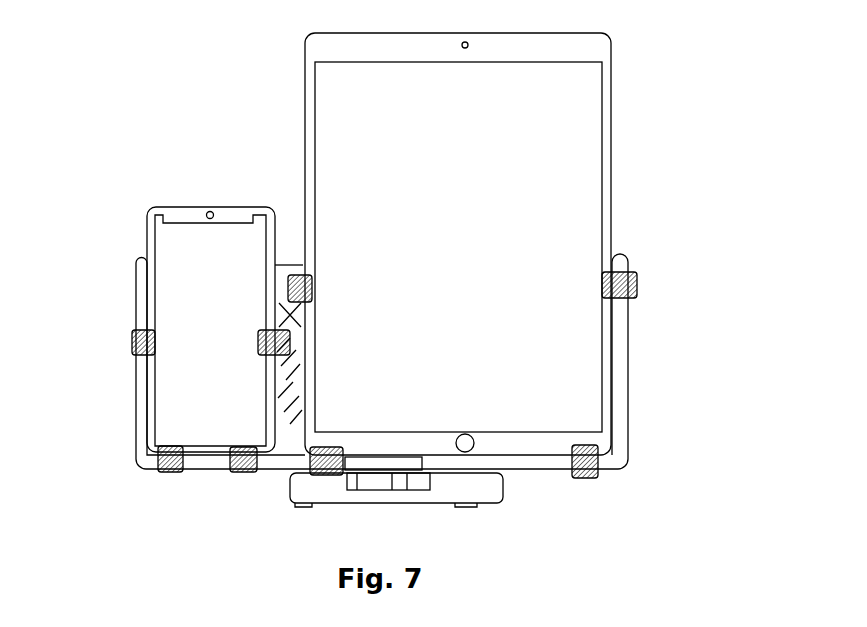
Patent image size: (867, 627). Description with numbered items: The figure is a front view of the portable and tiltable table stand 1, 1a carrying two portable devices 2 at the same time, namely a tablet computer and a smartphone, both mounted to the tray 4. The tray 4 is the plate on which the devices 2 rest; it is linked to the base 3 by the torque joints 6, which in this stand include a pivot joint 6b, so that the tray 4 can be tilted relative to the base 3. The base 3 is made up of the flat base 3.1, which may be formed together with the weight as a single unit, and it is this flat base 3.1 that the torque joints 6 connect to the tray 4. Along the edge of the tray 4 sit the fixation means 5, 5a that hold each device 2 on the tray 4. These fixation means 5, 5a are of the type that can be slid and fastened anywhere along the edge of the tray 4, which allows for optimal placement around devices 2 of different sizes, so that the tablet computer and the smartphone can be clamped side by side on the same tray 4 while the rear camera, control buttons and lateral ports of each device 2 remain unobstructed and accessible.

The stand 1 is at (370, 310).
The portable and tiltable table stand 1a is at (370, 310).
The portable device 2 is at (602, 50).
The base 3 is at (429, 509).
The flat base 3.1 is at (488, 490).
The tray 4 is at (618, 348).
The fixation means 5 is at (370, 373).
The slidable fixation means 5a is at (137, 328).
The torque joint 6 is at (399, 501).
The pivot joint 6b is at (392, 477).